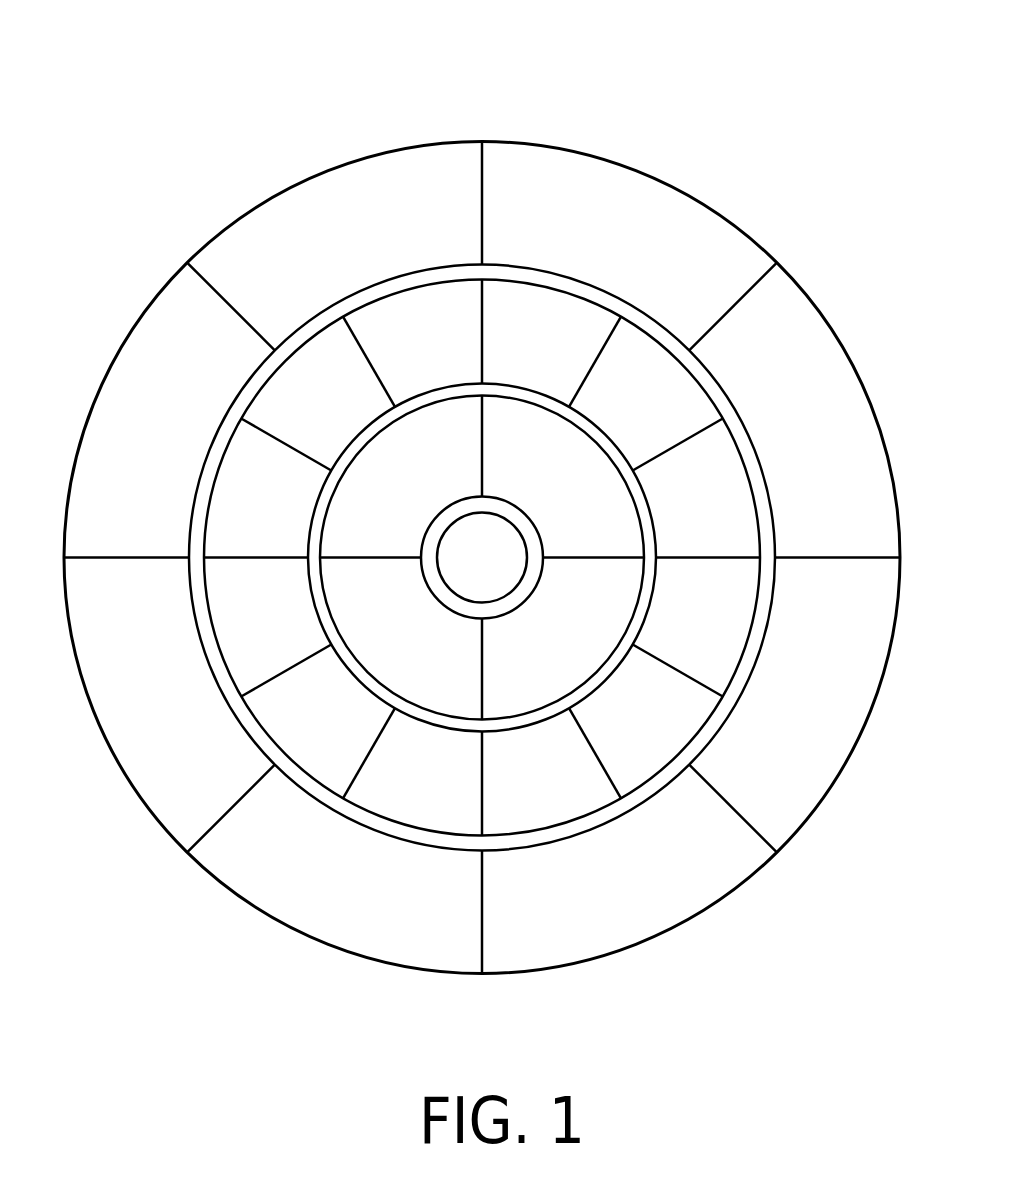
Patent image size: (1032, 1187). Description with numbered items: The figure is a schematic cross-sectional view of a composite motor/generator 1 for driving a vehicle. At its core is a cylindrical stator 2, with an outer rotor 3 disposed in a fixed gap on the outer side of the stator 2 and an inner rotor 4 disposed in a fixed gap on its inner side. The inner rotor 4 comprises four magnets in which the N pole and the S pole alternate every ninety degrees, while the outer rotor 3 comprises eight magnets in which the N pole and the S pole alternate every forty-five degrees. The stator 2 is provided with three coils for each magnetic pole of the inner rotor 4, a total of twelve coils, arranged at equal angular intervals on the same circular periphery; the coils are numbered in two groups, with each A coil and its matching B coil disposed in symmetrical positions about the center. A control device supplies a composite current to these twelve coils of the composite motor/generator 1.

The composite motor/generator 1 is at (647, 123).
The cylindrical stator 2 is at (529, 320).
The outer rotor 3 is at (410, 197).
The inner rotor 4 is at (408, 463).